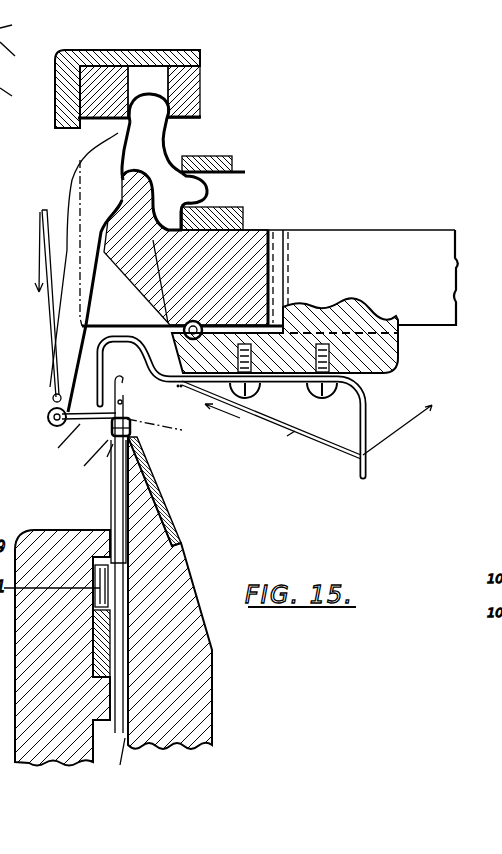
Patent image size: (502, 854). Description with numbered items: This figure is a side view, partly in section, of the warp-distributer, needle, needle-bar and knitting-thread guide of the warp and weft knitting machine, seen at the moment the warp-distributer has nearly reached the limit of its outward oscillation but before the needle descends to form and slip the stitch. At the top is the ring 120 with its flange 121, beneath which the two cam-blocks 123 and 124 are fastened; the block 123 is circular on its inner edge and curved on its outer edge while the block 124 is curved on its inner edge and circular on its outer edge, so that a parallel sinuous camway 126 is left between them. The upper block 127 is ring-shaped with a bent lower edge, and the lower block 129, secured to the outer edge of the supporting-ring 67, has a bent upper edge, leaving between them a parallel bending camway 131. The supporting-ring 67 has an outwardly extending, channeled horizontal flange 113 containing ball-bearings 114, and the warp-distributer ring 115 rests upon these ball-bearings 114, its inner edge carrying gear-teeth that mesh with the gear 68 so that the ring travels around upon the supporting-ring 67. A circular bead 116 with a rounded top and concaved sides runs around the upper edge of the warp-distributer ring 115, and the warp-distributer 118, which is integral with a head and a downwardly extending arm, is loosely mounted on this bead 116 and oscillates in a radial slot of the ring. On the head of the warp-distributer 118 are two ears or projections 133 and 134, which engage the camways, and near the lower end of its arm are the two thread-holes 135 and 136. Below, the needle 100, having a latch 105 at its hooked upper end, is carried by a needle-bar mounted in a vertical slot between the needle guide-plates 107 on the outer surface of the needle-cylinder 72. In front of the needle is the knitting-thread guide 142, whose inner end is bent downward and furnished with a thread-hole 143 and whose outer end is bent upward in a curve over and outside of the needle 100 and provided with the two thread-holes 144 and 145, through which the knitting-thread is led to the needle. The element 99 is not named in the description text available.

The ring 120 is at (208, 48).
The flange 121 is at (56, 97).
The cam-block 123 is at (98, 122).
The cam-block 124 is at (198, 101).
The camway 126 is at (148, 92).
The ear 133 is at (152, 137).
The ear 134 is at (188, 202).
The block 127 is at (224, 161).
The camway 131 is at (231, 187).
The block 129 is at (230, 218).
The circular bead 116 is at (145, 172).
The warp-distributer ring 115 is at (182, 278).
The warp-distributer 118 is at (72, 175).
The ball-bearings 114 is at (184, 327).
The gear 68 is at (333, 277).
The supporting-ring 67 is at (299, 335).
The horizontal flange 113 is at (290, 370).
The knitting-thread guide 142 is at (266, 407).
The thread-hole 145 is at (96, 395).
The thread-hole 143 is at (362, 456).
The thread-hole 144 is at (177, 388).
The thread-hole 135 is at (53, 397).
The thread-hole 136 is at (48, 417).
The latch 105 is at (110, 428).
The needle 100 is at (115, 513).
The needle guide-plates 107 is at (111, 490).
The needle-cylinder 72 is at (172, 593).
The plate 99 is at (162, 491).